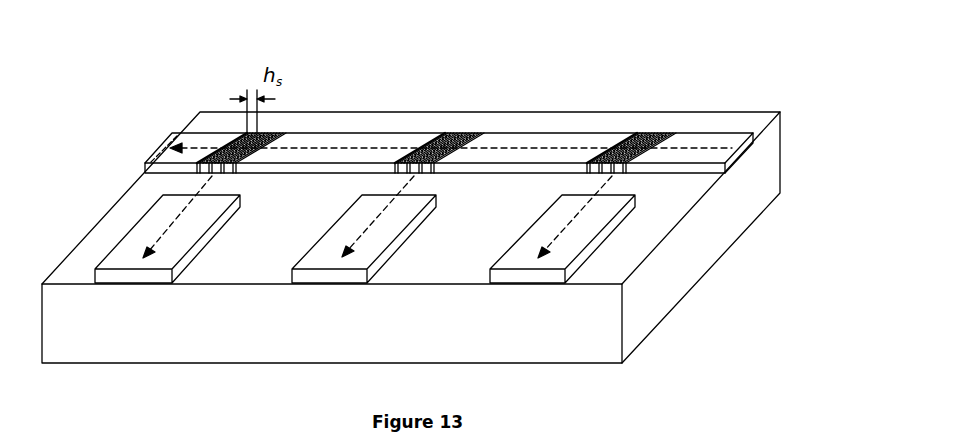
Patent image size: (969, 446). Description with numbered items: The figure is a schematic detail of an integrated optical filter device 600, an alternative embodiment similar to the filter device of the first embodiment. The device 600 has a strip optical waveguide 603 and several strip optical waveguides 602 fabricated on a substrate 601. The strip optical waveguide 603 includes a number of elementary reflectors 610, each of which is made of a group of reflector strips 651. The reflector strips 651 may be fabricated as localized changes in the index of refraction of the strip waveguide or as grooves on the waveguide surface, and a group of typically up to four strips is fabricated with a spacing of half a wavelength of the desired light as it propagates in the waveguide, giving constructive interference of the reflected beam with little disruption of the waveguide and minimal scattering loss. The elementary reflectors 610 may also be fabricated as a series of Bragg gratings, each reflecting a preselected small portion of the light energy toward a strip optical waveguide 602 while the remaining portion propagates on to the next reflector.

The integrated optical filter device 600 is at (210, 100).
The substrate 601 is at (655, 283).
The strip optical waveguide 602 is at (180, 265).
The strip optical waveguide 603 is at (547, 139).
The elementary reflector 610 is at (495, 127).
The reflector strip 651 is at (237, 172).